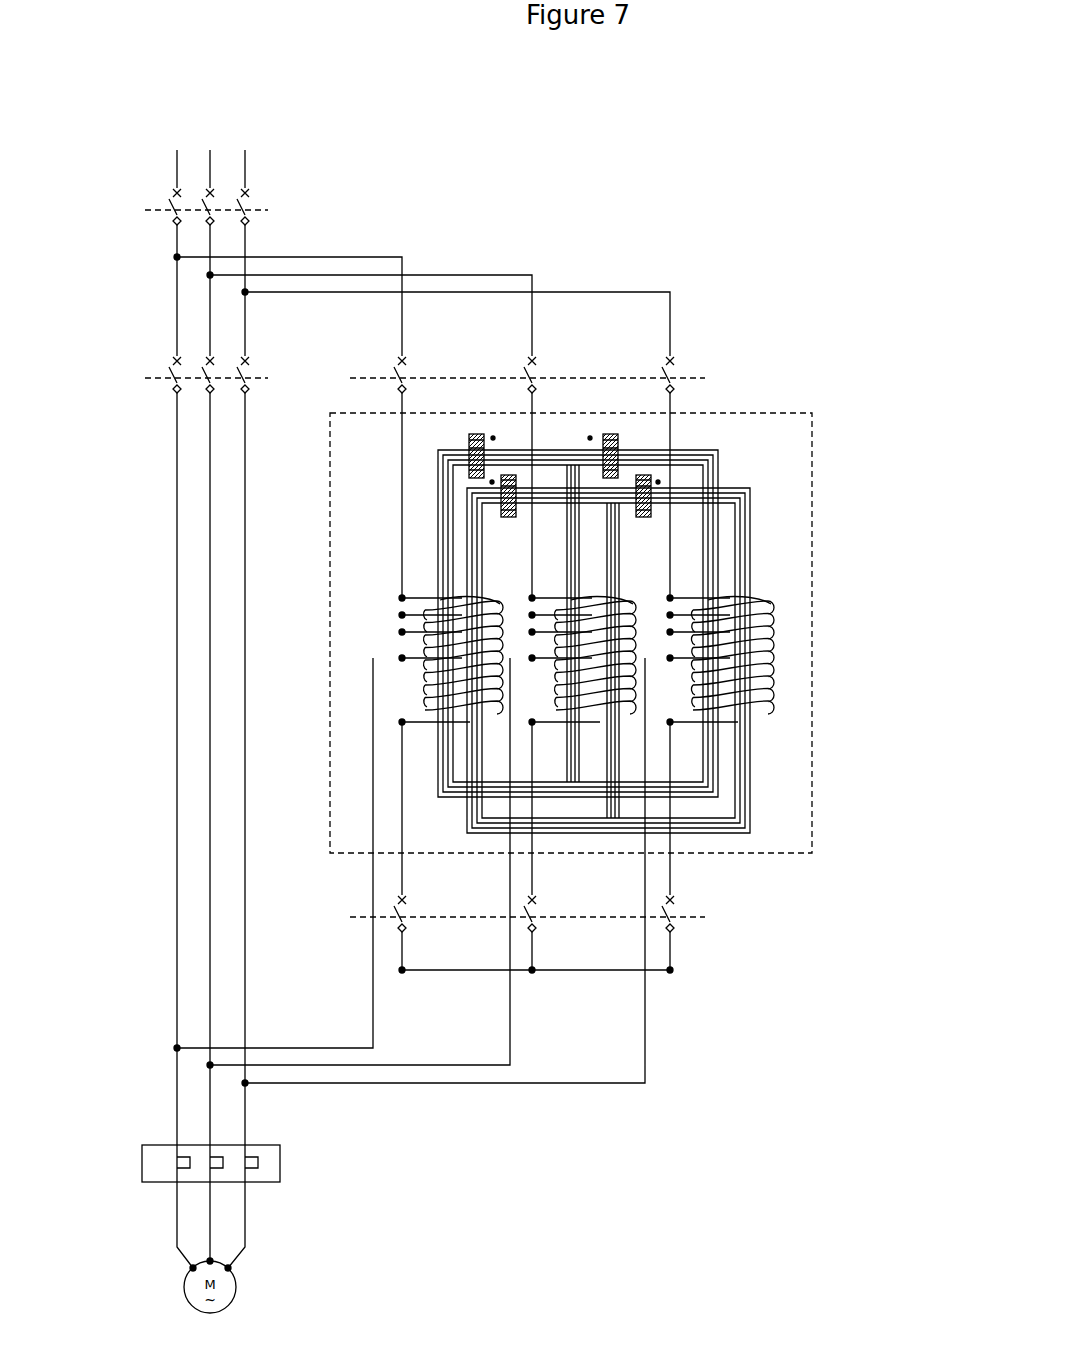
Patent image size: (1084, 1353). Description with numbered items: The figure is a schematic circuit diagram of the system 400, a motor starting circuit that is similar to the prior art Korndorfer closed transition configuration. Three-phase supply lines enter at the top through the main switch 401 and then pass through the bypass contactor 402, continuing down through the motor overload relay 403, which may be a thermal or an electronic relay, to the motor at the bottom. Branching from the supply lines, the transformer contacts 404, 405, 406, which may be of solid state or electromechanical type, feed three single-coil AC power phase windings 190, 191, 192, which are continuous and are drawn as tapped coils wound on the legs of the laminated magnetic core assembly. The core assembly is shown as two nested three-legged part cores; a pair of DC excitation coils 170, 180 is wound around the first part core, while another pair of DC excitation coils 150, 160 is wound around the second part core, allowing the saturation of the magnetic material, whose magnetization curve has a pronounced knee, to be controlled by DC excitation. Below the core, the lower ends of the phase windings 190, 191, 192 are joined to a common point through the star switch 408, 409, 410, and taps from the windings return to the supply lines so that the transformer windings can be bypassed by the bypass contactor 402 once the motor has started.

The system 400 is at (815, 201).
The main switch 401 is at (168, 199).
The bypass contactor 402 is at (168, 370).
The motor overload relay 403 is at (276, 1157).
The transformer contact 404 is at (405, 368).
The transformer contact 405 is at (533, 370).
The transformer contact 406 is at (672, 378).
The star switch 408 is at (406, 932).
The star switch 409 is at (535, 932).
The star switch 410 is at (672, 932).
The DC excitation coil 150 is at (477, 436).
The DC excitation coil 160 is at (607, 438).
The DC excitation coil 170 is at (506, 476).
The DC excitation coil 180 is at (655, 495).
The AC power phase winding 190 is at (402, 659).
The AC power phase winding 191 is at (598, 712).
The AC power phase winding 192 is at (745, 720).